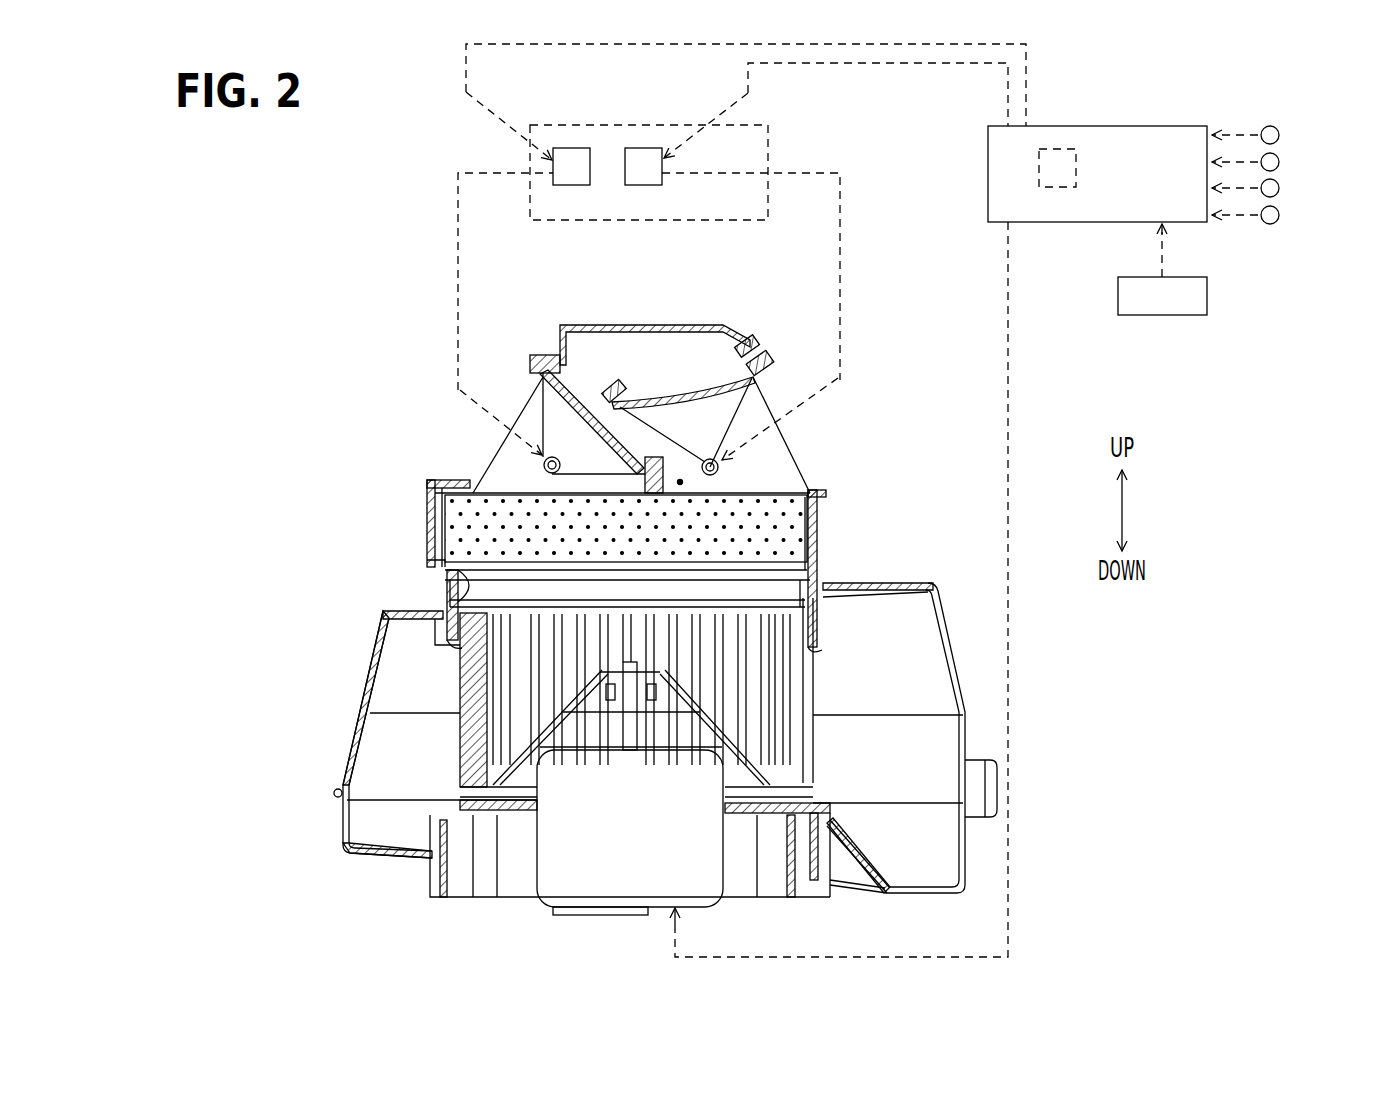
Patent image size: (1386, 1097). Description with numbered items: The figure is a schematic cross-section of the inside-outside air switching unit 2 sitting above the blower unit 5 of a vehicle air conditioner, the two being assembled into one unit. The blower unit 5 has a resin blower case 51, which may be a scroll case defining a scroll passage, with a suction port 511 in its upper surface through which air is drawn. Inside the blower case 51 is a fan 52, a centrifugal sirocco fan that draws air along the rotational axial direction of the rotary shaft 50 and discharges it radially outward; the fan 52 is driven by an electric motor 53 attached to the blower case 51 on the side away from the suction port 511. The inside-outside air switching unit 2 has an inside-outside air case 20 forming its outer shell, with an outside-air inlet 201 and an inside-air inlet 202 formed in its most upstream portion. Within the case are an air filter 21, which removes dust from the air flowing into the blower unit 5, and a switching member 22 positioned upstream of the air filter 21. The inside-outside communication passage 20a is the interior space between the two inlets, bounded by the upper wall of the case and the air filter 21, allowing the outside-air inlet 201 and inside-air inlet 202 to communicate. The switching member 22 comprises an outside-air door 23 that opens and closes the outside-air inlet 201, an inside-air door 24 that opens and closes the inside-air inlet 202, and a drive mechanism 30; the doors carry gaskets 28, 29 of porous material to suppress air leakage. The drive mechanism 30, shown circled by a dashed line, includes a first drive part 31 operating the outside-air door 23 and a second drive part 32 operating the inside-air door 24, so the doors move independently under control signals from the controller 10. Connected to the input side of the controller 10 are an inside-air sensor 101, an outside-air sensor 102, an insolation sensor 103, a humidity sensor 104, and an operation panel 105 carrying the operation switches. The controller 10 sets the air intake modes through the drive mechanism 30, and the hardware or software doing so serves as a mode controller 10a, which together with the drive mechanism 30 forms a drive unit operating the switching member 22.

The inside-outside air switching unit 2 is at (415, 510).
The blower unit 5 is at (358, 696).
The controller 10 is at (1147, 125).
The mode controller 10a is at (1058, 148).
The inside-outside air case 20 is at (822, 509).
The inside-outside communication passage 20a is at (683, 482).
The air filter 21 is at (795, 540).
The switching member 22 is at (540, 272).
The outside-air door 23 is at (584, 390).
The inside-air door 24 is at (652, 388).
The gasket 28 is at (538, 354).
The gasket 29 is at (767, 356).
The drive mechanism 30 is at (685, 122).
The first drive part 31 is at (568, 148).
The second drive part 32 is at (645, 148).
The rotary shaft 50 is at (603, 735).
The blower case 51 is at (355, 747).
The fan 52 is at (468, 680).
The electric motor 53 is at (530, 862).
The inside-air sensor 101 is at (1280, 135).
The outside-air sensor 102 is at (1280, 162).
The insolation sensor 103 is at (1280, 188).
The humidity sensor 104 is at (1280, 215).
The operation panel 105 is at (1172, 316).
The outside-air inlet 201 is at (490, 460).
The inside-air inlet 202 is at (792, 452).
The suction port 511 is at (432, 570).